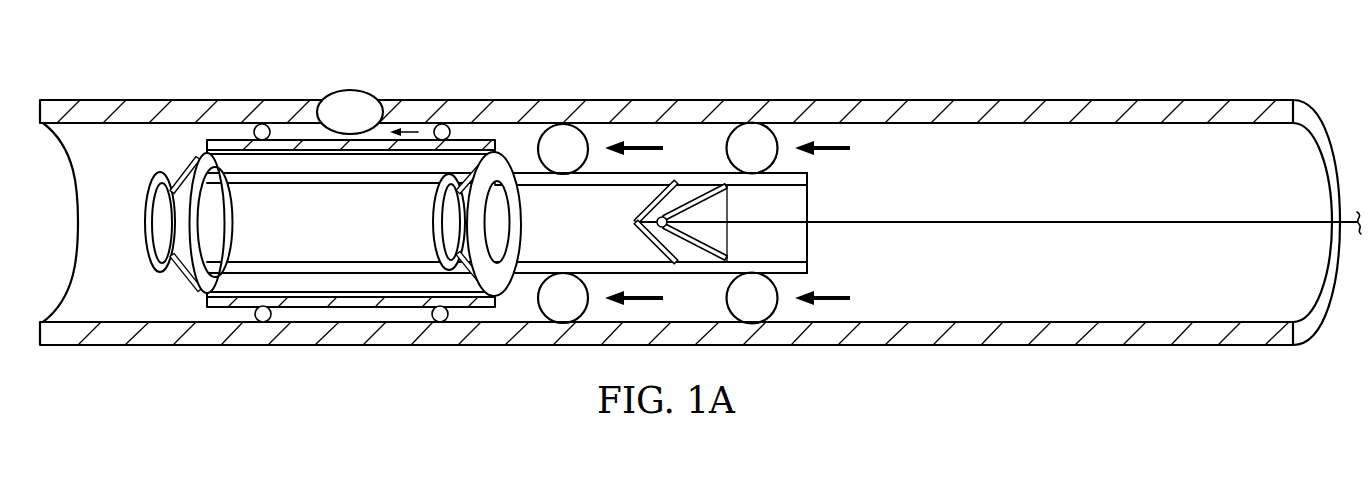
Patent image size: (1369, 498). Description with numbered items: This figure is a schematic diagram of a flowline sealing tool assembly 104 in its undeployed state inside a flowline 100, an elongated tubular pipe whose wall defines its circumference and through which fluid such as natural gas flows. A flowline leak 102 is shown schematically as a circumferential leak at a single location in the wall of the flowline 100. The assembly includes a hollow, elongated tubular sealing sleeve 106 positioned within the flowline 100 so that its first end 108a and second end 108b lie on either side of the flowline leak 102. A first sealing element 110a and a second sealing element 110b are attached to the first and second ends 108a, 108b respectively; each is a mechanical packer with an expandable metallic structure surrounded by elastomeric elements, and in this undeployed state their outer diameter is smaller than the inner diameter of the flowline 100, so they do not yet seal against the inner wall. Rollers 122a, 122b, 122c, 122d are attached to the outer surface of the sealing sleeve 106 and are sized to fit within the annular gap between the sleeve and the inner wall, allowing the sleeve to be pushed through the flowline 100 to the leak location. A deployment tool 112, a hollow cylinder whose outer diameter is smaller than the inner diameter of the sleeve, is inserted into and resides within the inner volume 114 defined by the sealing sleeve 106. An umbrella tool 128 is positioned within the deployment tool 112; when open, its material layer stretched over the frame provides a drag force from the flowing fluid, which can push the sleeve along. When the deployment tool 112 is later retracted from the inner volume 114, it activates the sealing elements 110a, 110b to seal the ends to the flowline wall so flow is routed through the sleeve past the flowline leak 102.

The flowline 100 is at (838, 99).
The flowline leak 102 is at (355, 89).
The flowline sealing tool assembly 104 is at (533, 83).
The sealing sleeve 106 is at (217, 142).
The first end 108a is at (205, 145).
The second end 108b is at (498, 301).
The first sealing element 110a is at (236, 222).
The second sealing element 110b is at (523, 224).
The deployment tool 112 is at (715, 183).
The inner volume 114 is at (333, 220).
The roller 122a is at (440, 124).
The roller 122b is at (262, 124).
The roller 122c is at (262, 323).
The roller 122d is at (440, 323).
The umbrella tool 128 is at (690, 196).